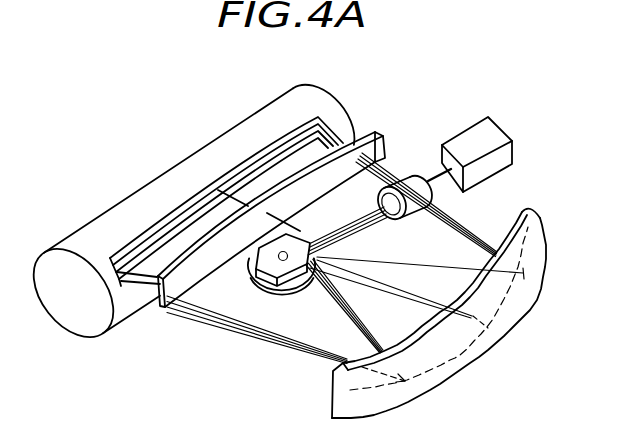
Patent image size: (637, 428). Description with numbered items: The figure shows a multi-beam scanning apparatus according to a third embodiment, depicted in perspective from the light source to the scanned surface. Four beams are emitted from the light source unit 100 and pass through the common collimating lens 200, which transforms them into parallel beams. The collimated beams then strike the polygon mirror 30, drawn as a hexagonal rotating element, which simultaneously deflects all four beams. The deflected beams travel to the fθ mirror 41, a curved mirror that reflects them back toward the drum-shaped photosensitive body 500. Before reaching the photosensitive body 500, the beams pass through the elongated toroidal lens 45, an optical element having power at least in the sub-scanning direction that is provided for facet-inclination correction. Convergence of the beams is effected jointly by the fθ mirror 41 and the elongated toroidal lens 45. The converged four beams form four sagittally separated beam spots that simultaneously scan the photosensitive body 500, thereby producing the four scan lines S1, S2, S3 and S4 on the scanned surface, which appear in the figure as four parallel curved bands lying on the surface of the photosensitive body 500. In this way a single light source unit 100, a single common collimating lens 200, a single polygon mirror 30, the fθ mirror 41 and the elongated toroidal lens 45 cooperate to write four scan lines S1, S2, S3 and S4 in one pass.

The photosensitive body 500 is at (320, 98).
The scan line S1 is at (111, 257).
The scan line S2 is at (152, 235).
The scan line S3 is at (180, 221).
The scan line S4 is at (198, 208).
The elongated toroidal lens 45 is at (376, 131).
The light source unit 100 is at (478, 132).
The common collimating lens 200 is at (377, 208).
The polygon mirror 30 is at (251, 275).
The fθ mirror 41 is at (538, 226).